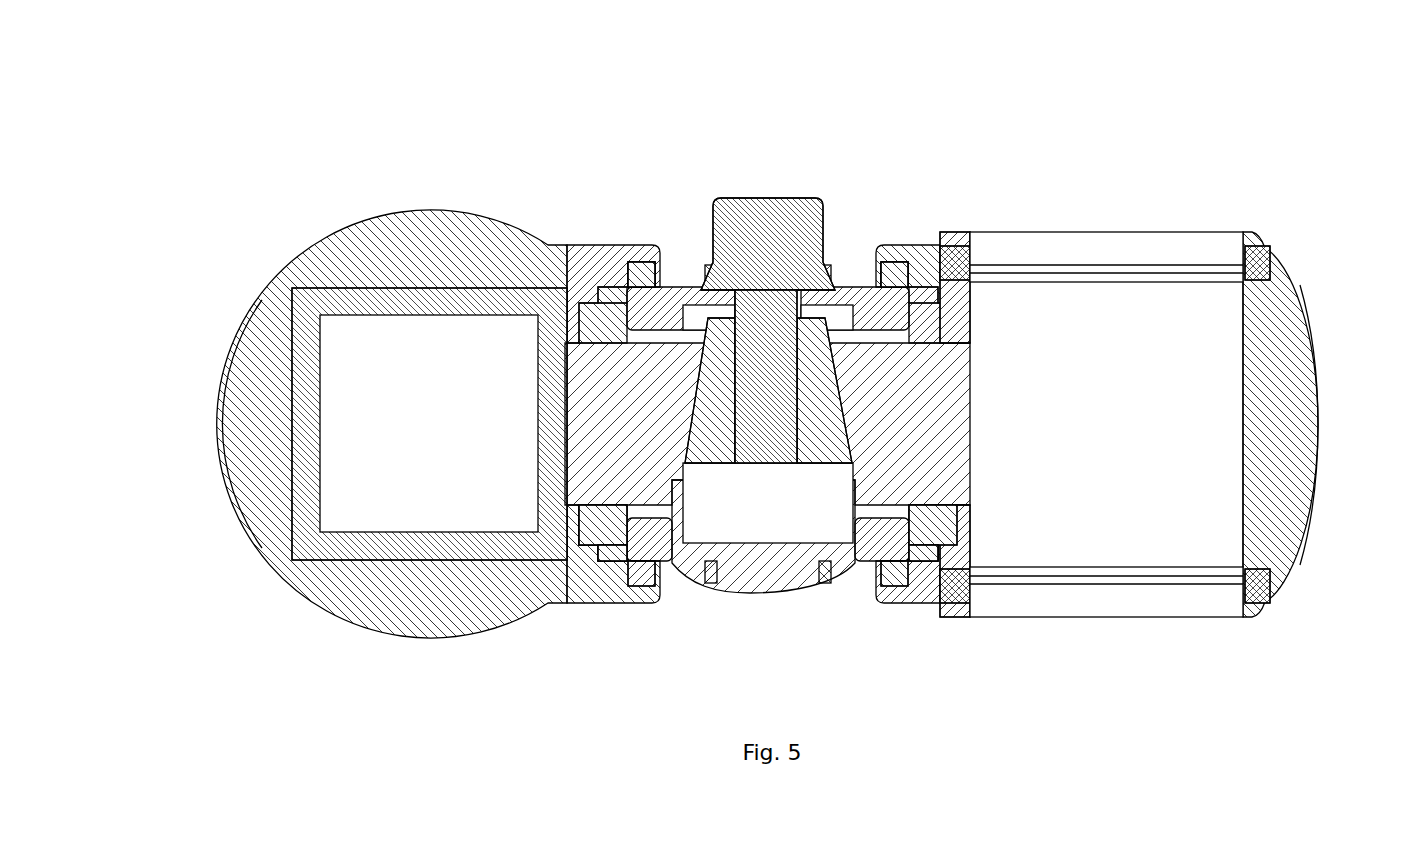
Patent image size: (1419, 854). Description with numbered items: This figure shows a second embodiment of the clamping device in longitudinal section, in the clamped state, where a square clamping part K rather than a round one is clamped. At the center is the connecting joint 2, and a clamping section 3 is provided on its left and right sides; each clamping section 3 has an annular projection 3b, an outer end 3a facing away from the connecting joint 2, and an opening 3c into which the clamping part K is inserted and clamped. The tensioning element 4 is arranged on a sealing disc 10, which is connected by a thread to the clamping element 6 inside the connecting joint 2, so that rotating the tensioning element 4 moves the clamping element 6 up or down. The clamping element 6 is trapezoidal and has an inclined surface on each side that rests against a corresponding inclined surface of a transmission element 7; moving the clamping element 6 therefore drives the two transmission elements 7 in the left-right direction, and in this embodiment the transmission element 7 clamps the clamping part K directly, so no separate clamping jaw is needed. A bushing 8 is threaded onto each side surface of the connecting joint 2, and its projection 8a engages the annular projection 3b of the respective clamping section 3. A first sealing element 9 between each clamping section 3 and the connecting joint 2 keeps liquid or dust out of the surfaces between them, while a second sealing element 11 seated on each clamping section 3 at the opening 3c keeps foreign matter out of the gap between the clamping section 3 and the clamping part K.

The connecting joint 2 is at (800, 440).
The clamping section 3 is at (382, 267).
The end 3a is at (255, 418).
The annular projection 3b is at (617, 533).
The opening 3c is at (368, 458).
The tensioning element 4 is at (766, 236).
The clamping element 6 is at (828, 432).
The transmission element 7 is at (657, 387).
The bushing 8 is at (673, 520).
The projection 8a is at (568, 553).
The first sealing element 9 is at (880, 253).
The sealing disc 10 is at (706, 262).
The second sealing element 11 is at (1077, 262).
The clamping part K is at (307, 337).